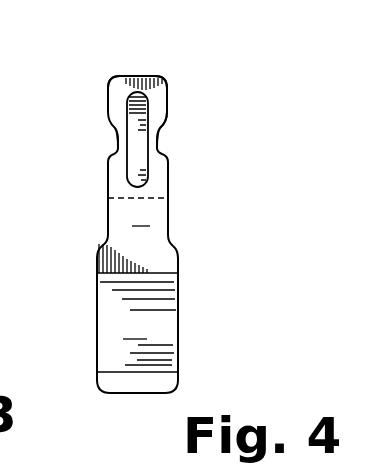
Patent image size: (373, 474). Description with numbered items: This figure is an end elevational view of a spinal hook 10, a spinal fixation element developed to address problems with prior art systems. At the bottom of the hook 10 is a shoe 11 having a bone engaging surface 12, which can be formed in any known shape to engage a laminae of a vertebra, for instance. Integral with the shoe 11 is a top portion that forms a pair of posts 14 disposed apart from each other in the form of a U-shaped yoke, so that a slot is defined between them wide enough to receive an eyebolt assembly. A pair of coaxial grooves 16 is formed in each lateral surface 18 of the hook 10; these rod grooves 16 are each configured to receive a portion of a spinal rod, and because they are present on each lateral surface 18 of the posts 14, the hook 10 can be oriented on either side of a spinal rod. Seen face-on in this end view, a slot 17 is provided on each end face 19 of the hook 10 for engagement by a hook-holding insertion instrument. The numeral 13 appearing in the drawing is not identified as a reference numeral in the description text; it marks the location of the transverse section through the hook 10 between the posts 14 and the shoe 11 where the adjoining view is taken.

The spinal hook 10 is at (213, 238).
The shoe 11 is at (97, 329).
The bone engaging surface 12 is at (135, 328).
The section line 13 is at (108, 203).
The posts 14 is at (122, 76).
The coaxial grooves 16 is at (113, 127).
The slots 17 is at (127, 166).
The lateral surface 18 is at (108, 218).
The end face 19 is at (143, 216).